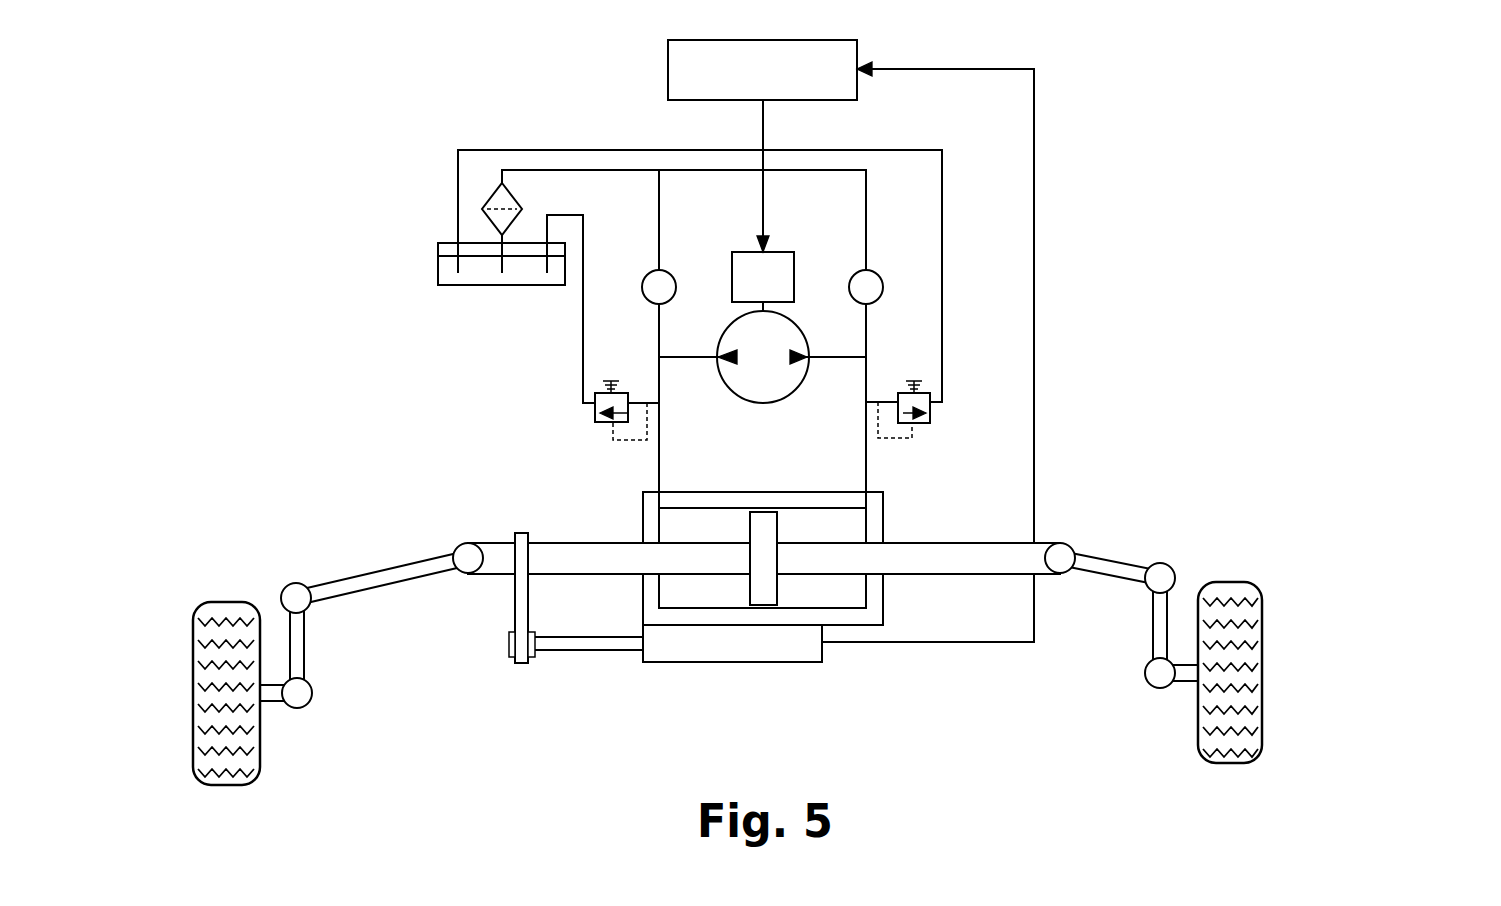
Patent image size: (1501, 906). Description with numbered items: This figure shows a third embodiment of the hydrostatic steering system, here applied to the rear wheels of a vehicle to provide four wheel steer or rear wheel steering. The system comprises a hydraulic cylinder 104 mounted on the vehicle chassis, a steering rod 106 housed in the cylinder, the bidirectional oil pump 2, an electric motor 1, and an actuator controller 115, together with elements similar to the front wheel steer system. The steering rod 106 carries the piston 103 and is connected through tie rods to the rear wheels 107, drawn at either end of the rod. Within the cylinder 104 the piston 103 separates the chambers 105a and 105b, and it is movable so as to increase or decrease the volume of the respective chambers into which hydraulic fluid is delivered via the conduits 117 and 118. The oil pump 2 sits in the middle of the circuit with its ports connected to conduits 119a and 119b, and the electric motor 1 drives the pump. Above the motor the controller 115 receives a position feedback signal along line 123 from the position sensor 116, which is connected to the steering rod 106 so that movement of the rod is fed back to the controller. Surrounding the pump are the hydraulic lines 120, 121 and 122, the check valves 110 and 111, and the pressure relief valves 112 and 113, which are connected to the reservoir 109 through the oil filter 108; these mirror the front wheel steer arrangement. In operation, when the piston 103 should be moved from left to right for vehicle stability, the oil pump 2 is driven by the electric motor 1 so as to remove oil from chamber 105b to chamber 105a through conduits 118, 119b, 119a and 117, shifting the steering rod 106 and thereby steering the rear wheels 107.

The electric motor 1 is at (738, 262).
The oil pump 2 is at (758, 378).
The piston 103 is at (765, 597).
The hydraulic cylinder 104 is at (652, 521).
The chamber 105a is at (690, 598).
The chamber 105b is at (832, 598).
The steering rod 106 is at (1012, 556).
The rear wheels 107 is at (1225, 606).
The oil filter 108 is at (498, 186).
The reservoir 109 is at (440, 278).
The check valve 110 is at (642, 290).
The check valve 111 is at (883, 287).
The pressure relief valve 112 is at (596, 420).
The pressure relief valve 113 is at (930, 393).
The actuator controller 115 is at (762, 50).
The position sensor 116 is at (676, 650).
The conduit 117 is at (659, 465).
The conduit 118 is at (866, 455).
The conduit 119a is at (685, 360).
The conduit 119b is at (842, 360).
The conduit 120 is at (583, 263).
The conduit 121 is at (940, 372).
The conduit 122 is at (602, 170).
The position feedback signal line 123 is at (1088, 62).